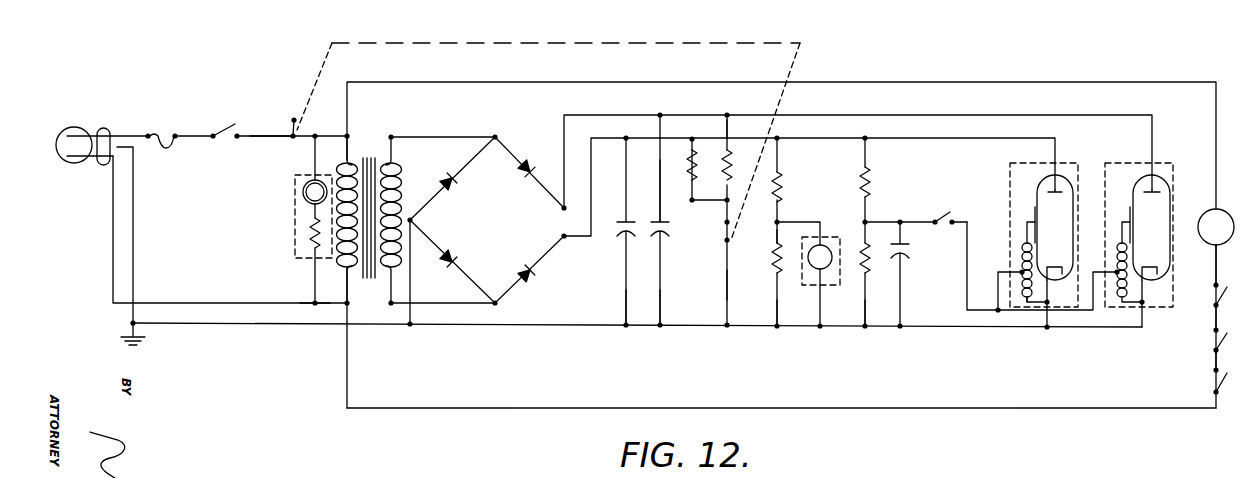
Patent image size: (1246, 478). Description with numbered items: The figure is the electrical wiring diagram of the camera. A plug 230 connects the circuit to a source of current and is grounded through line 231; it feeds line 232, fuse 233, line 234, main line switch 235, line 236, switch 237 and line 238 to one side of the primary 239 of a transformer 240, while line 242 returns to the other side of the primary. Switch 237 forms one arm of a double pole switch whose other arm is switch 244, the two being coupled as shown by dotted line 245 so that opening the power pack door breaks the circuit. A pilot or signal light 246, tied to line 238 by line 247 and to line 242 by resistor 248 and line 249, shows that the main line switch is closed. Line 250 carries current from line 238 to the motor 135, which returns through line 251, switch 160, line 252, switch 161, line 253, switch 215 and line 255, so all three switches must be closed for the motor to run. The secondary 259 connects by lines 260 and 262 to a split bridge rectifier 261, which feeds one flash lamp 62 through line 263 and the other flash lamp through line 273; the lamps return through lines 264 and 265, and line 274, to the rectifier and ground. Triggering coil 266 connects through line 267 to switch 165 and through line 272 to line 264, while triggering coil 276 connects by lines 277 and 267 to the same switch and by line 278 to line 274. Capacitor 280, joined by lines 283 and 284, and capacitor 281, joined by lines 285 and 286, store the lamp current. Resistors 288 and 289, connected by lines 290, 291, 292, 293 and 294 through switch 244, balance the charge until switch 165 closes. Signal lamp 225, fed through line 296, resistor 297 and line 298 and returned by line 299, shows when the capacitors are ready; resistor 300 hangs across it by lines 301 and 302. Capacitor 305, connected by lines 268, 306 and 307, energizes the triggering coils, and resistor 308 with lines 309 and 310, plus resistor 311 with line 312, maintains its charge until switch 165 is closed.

The plug 230 is at (78, 127).
The line 231 is at (133, 251).
The line 232 is at (130, 129).
The fuse 233 is at (165, 149).
The line 234 is at (192, 129).
The main line switch 235 is at (230, 141).
The line 236 is at (270, 140).
The switch 237 is at (290, 130).
The line 238 is at (332, 134).
The primary 239 is at (355, 152).
The transformer 240 is at (375, 142).
The line 242 is at (113, 251).
The switch arm 244 is at (725, 240).
The dotted line 245 is at (660, 43).
The pilot or signal light 246 is at (302, 193).
The line 247 is at (311, 164).
The resistor 248 is at (310, 236).
The line 249 is at (312, 280).
The line 250 is at (655, 82).
The line 251 is at (1215, 265).
The line 252 is at (1215, 318).
The line 253 is at (1215, 361).
The line 255 is at (890, 408).
The secondary 259 is at (400, 188).
The line 260 is at (452, 137).
The split bridge rectifier 261 is at (468, 166).
The line 262 is at (453, 303).
The line 263 is at (845, 117).
The line 264 is at (586, 327).
The line 265 is at (411, 283).
The triggering wire or coil 266 is at (1128, 210).
The line 267 is at (967, 258).
The line 268 is at (908, 214).
The line 272 is at (1141, 308).
The line 273 is at (994, 141).
The line 274 is at (1044, 318).
The triggering wire or coil 276 is at (1033, 214).
The line 277 is at (998, 283).
The line 278 is at (1041, 308).
The capacitor 280 is at (662, 237).
The capacitor 281 is at (622, 235).
The line 283 is at (659, 210).
The line 284 is at (661, 307).
The line 285 is at (626, 184).
The line 286 is at (624, 296).
The resistor 288 is at (727, 165).
The resistor 289 is at (686, 166).
The line 290 is at (728, 127).
The line 291 is at (723, 190).
The line 292 is at (724, 283).
The line 293 is at (690, 139).
The line 294 is at (692, 201).
The line 296 is at (802, 220).
The resistor 297 is at (790, 178).
The line 298 is at (779, 152).
The line 299 is at (820, 300).
The resistor 300 is at (777, 262).
The line 301 is at (776, 236).
The line 302 is at (778, 310).
The capacitor 305 is at (906, 262).
The line 306 is at (906, 237).
The line 307 is at (900, 310).
The resistor 308 is at (866, 274).
The line 309 is at (866, 238).
The line 310 is at (868, 297).
The resistor 311 is at (870, 178).
The line 312 is at (866, 152).
The switch 165 is at (945, 210).
The signal lamp 225 is at (808, 246).
The flash lamp 62 is at (1133, 198).
The motor 135 is at (1207, 210).
The switch 160 is at (1213, 295).
The switch 161 is at (1213, 340).
The switch 215 is at (1213, 383).